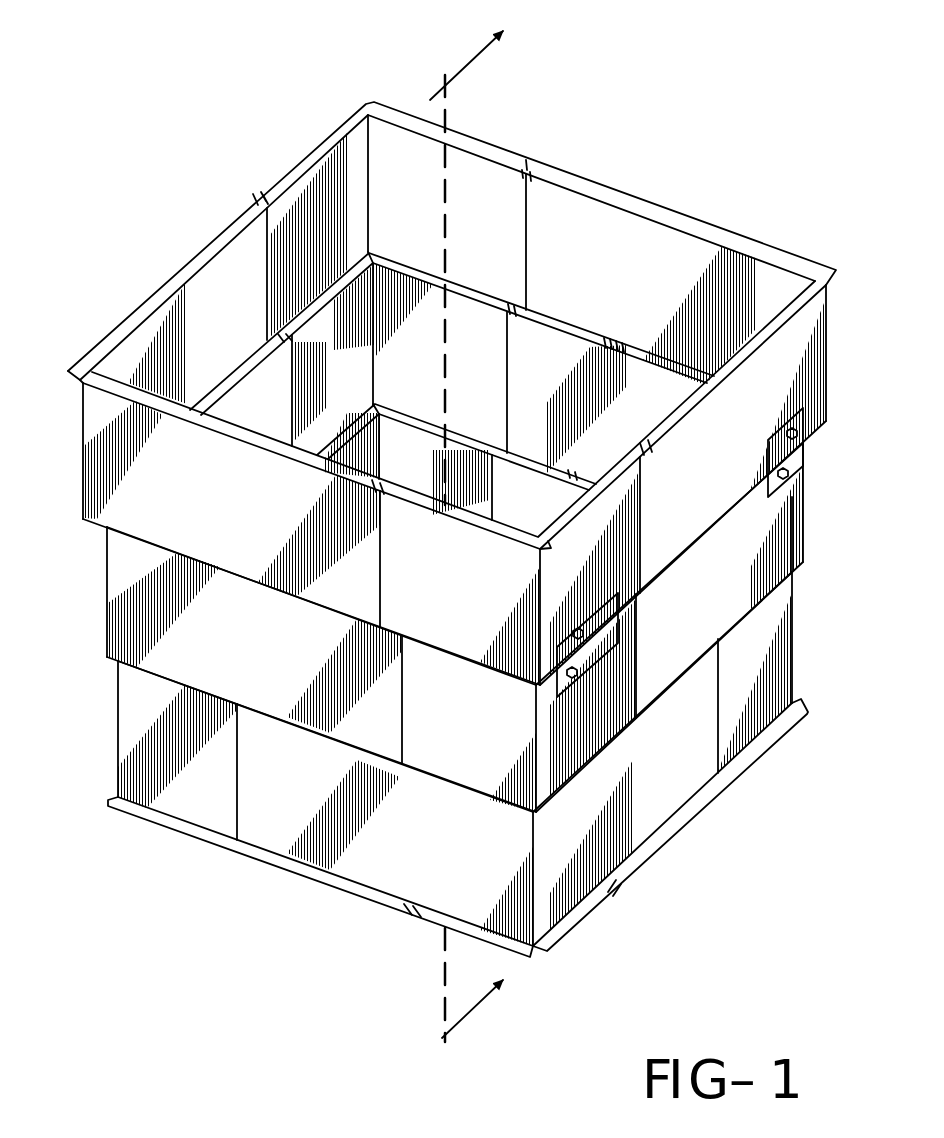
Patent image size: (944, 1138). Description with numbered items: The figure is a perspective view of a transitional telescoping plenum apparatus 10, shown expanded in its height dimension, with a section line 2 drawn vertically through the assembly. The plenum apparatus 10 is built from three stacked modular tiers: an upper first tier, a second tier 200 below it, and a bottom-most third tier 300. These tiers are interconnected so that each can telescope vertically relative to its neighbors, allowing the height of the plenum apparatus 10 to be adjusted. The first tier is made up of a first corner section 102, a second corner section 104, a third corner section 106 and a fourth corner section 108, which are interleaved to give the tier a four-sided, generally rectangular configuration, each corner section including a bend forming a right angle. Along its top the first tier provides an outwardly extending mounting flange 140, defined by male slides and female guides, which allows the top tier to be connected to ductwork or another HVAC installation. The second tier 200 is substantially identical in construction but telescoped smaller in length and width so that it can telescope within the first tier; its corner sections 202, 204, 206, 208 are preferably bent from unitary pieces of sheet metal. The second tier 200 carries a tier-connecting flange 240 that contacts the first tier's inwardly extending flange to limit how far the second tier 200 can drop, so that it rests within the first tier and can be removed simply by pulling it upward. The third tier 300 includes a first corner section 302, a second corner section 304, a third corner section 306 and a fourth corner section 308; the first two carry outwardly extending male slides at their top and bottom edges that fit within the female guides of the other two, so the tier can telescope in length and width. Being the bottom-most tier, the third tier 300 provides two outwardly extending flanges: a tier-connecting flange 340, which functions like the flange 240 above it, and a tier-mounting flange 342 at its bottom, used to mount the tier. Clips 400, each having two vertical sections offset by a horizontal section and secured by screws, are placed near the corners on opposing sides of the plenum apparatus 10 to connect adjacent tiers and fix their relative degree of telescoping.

The transitional telescoping plenum apparatus 10 is at (232, 104).
The section line 2- 2 is at (456, 556).
The first corner section 102 is at (357, 147).
The second corner section 104 is at (630, 528).
The third corner section 106 is at (114, 360).
The fourth corner section 108 is at (823, 366).
The mounting flange 140 is at (237, 204).
The second tier 200 is at (103, 595).
The corner section 202 is at (483, 359).
The corner section 204 is at (628, 656).
The corner section 206 is at (112, 630).
The corner section 208 is at (802, 515).
The tier-connecting flange 240 is at (282, 338).
The third tier 300 is at (117, 716).
The first corner section 302 is at (483, 498).
The second corner section 304 is at (630, 843).
The third corner section 306 is at (130, 765).
The fourth corner section 308 is at (783, 648).
The tier-connecting flange 340 is at (276, 866).
The tier-mounting flange 342 is at (716, 797).
The clip 400 is at (783, 448).